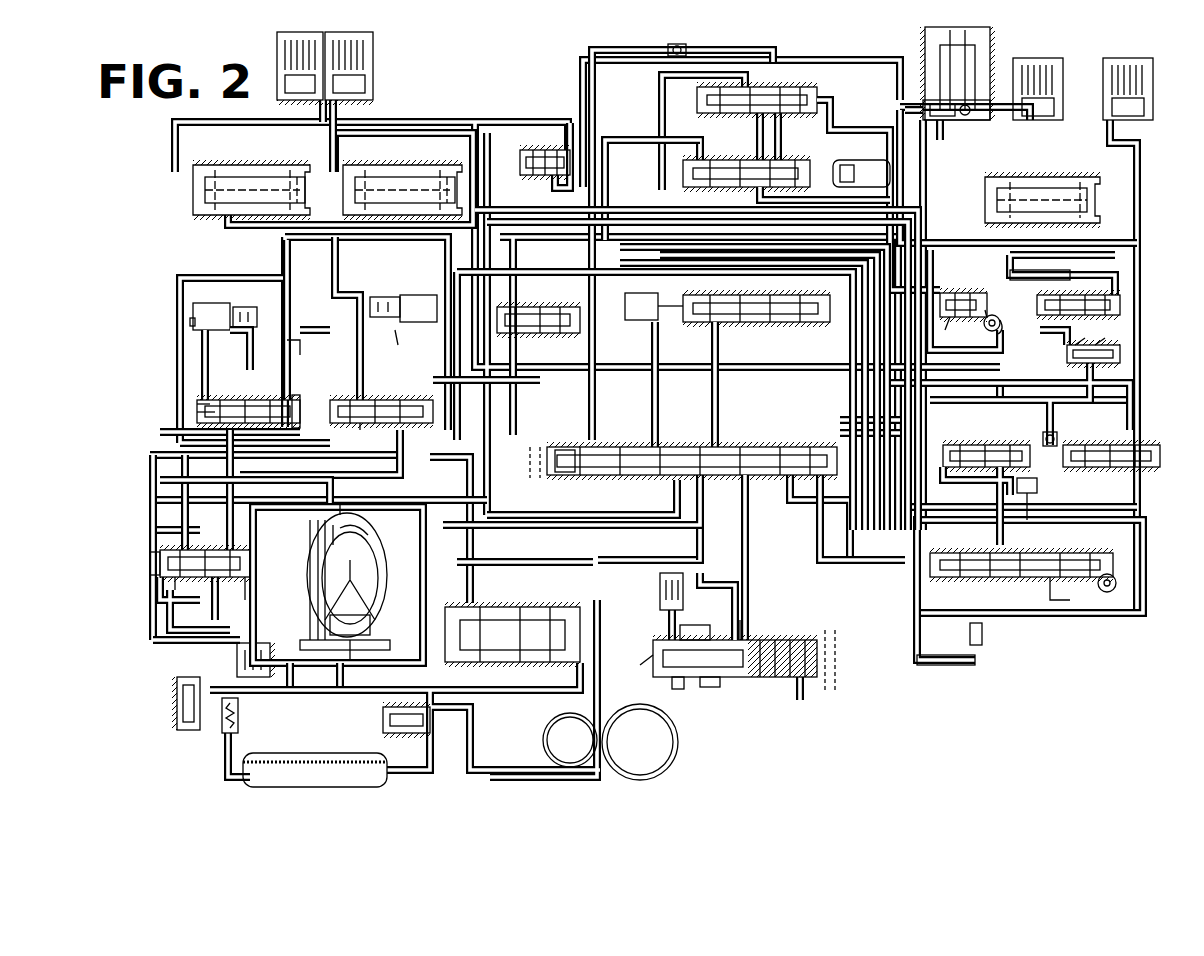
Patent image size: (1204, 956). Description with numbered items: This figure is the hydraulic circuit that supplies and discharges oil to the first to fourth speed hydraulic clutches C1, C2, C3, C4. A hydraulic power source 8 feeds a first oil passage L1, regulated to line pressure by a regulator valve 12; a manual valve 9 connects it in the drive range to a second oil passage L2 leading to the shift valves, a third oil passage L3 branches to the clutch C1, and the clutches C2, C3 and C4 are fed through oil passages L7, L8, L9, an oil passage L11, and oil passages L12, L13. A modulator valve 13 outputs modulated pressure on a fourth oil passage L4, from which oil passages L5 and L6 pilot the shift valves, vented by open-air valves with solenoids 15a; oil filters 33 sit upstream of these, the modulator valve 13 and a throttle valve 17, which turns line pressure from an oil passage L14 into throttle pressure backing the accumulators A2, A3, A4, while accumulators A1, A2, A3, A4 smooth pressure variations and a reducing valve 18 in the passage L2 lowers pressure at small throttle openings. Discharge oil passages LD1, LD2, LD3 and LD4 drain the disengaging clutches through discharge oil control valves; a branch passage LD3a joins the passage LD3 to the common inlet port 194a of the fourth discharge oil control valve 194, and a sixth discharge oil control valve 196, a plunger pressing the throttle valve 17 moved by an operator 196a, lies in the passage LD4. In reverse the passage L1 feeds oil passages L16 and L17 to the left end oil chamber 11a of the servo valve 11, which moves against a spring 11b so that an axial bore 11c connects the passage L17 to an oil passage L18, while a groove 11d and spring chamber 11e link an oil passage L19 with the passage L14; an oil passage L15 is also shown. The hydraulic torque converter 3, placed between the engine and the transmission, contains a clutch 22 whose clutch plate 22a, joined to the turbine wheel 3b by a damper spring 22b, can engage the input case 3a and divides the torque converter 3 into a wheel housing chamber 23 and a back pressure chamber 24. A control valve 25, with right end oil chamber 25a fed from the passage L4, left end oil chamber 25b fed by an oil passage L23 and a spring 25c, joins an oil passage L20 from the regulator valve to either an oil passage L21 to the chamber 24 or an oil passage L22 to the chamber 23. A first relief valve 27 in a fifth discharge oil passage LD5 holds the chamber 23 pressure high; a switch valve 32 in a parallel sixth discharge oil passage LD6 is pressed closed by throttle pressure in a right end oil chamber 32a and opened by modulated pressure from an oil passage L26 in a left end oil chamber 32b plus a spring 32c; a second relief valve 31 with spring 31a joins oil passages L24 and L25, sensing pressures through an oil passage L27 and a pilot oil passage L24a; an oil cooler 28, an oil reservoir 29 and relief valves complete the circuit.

The hydraulic torque converter 3 is at (385, 560).
The input case 3a is at (315, 555).
The turbine wheel 3b is at (360, 528).
The hydraulic power source 8 is at (680, 750).
The manual valve 9 is at (607, 478).
The servo valve 11 is at (795, 678).
The left end oil chamber 11a is at (648, 670).
The spring 11b is at (680, 690).
The axial bore 11c is at (715, 688).
The groove 11d is at (745, 624).
The spring chamber 11e is at (678, 630).
The regulator valve 12 is at (500, 665).
The modulator valve 13 is at (1000, 470).
The solenoids 15a is at (418, 295).
The throttle valve 17 is at (1025, 580).
The reducing valve 18 is at (550, 307).
The sixth discharge oil control valve 196 is at (1065, 580).
The operator 196a is at (1110, 593).
The fourth discharge oil control valve 194 is at (1122, 358).
The common inlet port 194a is at (1122, 345).
The clutch 22 is at (308, 530).
The clutch plate 22a is at (292, 680).
The damper spring 22b is at (160, 481).
The wheel housing chamber 23 is at (360, 575).
The back pressure chamber 24 is at (342, 680).
The control valve 25 is at (222, 398).
The right end oil chamber 25a is at (298, 390).
The left end oil chamber 25b is at (197, 408).
The spring 25c is at (197, 400).
The first relief valve 27 is at (237, 658).
The oil cooler 28 is at (222, 735).
The oil reservoir 29 is at (400, 768).
The second relief valve 31 is at (440, 410).
The spring 31a is at (368, 398).
The switch valve 32 is at (203, 548).
The right end oil chamber 32a is at (248, 580).
The left end oil chamber 32b is at (150, 560).
The spring 32c is at (170, 592).
The oil filters 33 is at (245, 305).
The accumulator A1 is at (990, 62).
The accumulator A2 is at (405, 165).
The accumulator A3 is at (1055, 177).
The accumulator A4 is at (258, 165).
The first speed hydraulic clutch C1 is at (1043, 58).
The second speed hydraulic clutch C2 is at (365, 32).
The third speed hydraulic clutch C3 is at (1130, 58).
The fourth speed hydraulic clutch C4 is at (277, 32).
The No. 1 oil passage L1 is at (747, 555).
The No. 2 oil passage L2 is at (718, 380).
The No. 3 oil passage L3 is at (1025, 125).
The No. 4 oil passage L4 is at (283, 245).
The No. 5 oil passage L5 is at (845, 198).
The No. 6 oil passage L6 is at (832, 125).
The No. 7 oil passage L7 is at (912, 275).
The No. 8 oil passage L8 is at (760, 263).
The No. 9 oil passage L9 is at (340, 112).
The No. 11 oil passage L11 is at (850, 60).
The No. 12 oil passage L12 is at (690, 48).
The No. 13 oil passage L13 is at (418, 125).
The No. 14 oil passage L14 is at (660, 590).
The oil line L15 is at (652, 140).
The No. 16 oil passage L16 is at (712, 360).
The No. 17 oil passage L17 is at (512, 272).
The No. 18 oil passage L18 is at (737, 600).
The No. 19 oil passage L19 is at (662, 100).
The No. 20 oil passage L20 is at (175, 432).
The No. 21 oil passage L21 is at (160, 455).
The No. 22 oil passage L22 is at (155, 502).
The No. 23 oil passage L23 is at (205, 380).
The No. 24 oil passage L24 is at (440, 478).
The pilot oil passage L24a is at (480, 381).
The No. 25 oil passage L25 is at (355, 477).
The No. 26 oil passage L26 is at (330, 312).
The No. 27 oil passage L27 is at (445, 458).
The first discharge oil passage LD1 is at (705, 185).
The second discharge oil passage LD2 is at (580, 80).
The third discharge oil passage LD3 is at (1080, 275).
The branch passage LD3a is at (1095, 340).
The fourth discharge oil passage LD4 is at (910, 232).
The fifth discharge oil passage LD5 is at (378, 655).
The sixth discharge oil passage LD6 is at (190, 640).